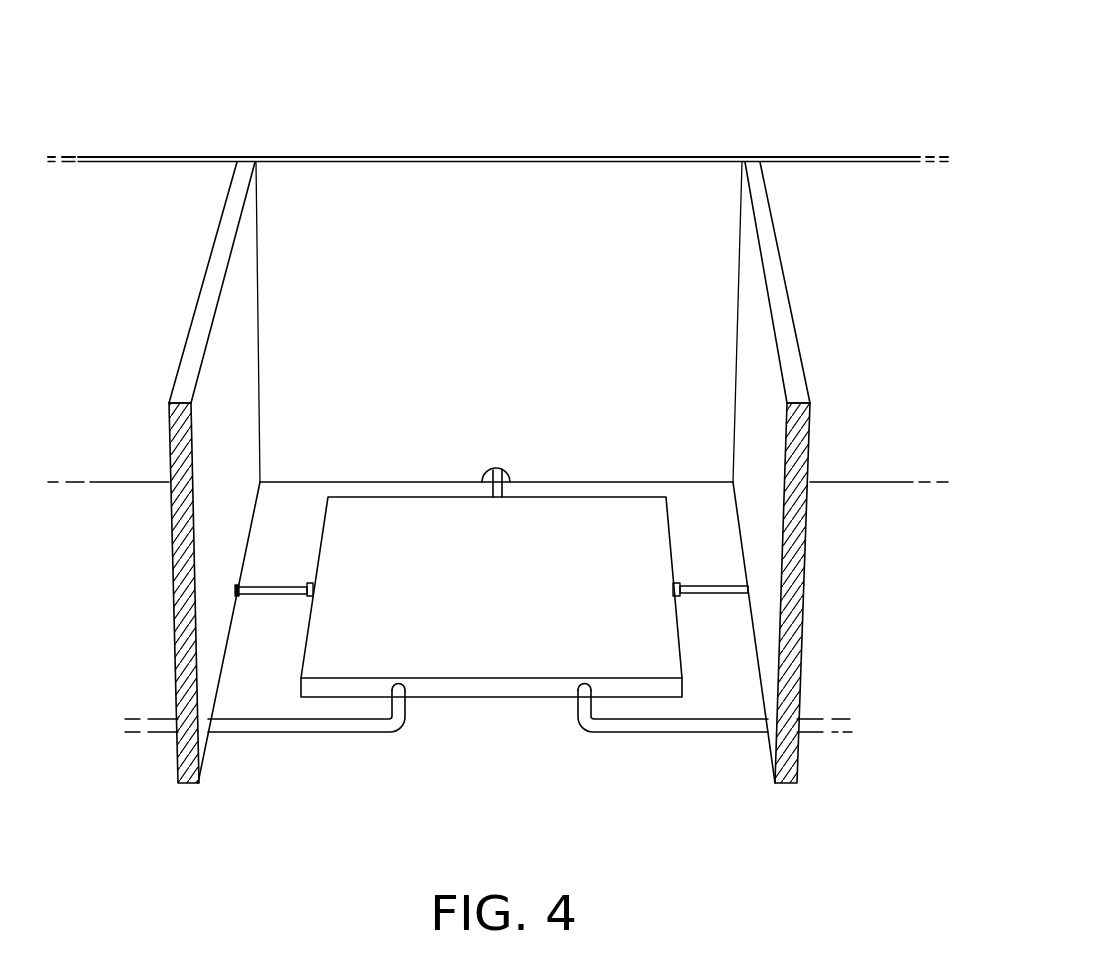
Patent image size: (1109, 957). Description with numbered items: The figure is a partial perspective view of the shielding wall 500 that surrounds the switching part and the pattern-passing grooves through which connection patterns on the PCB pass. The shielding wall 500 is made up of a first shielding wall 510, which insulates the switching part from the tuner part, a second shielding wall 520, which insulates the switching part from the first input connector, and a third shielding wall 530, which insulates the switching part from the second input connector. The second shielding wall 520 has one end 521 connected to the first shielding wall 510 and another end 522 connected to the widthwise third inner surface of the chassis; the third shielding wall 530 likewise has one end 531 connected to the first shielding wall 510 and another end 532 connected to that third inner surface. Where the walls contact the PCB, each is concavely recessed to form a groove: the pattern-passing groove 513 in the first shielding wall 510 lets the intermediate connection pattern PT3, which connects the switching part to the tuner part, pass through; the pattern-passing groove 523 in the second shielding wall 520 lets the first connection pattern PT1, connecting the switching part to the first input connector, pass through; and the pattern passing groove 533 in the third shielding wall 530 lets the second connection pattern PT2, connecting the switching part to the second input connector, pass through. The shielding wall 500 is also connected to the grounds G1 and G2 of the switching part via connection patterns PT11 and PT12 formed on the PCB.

The shielding wall 500 is at (780, 128).
The first shielding wall 510 is at (518, 170).
The pattern-passing groove 513 is at (510, 480).
The second shielding wall 520 is at (214, 364).
The one end 521 is at (258, 203).
The another end 522 is at (180, 578).
The pattern-passing groove 523 is at (212, 740).
The third shielding wall 530 is at (760, 345).
The one end 531 is at (740, 215).
The another end 532 is at (803, 551).
The pattern passing groove 533 is at (767, 738).
The first connection pattern PT1 is at (320, 734).
The second connection pattern PT2 is at (665, 734).
The intermediate connection pattern PT3 is at (482, 484).
The connection pattern PT11 is at (264, 590).
The connection pattern PT12 is at (713, 585).
The ground G1 is at (313, 582).
The ground G2 is at (675, 585).